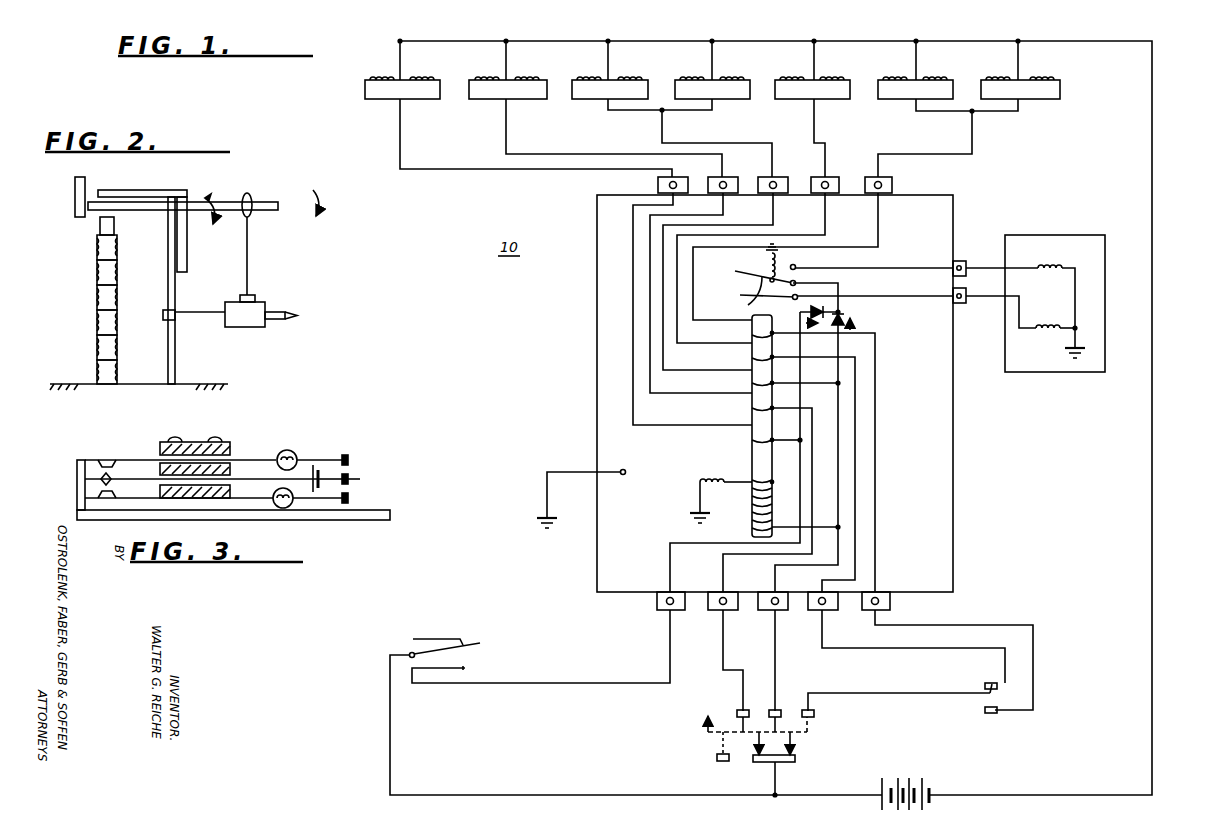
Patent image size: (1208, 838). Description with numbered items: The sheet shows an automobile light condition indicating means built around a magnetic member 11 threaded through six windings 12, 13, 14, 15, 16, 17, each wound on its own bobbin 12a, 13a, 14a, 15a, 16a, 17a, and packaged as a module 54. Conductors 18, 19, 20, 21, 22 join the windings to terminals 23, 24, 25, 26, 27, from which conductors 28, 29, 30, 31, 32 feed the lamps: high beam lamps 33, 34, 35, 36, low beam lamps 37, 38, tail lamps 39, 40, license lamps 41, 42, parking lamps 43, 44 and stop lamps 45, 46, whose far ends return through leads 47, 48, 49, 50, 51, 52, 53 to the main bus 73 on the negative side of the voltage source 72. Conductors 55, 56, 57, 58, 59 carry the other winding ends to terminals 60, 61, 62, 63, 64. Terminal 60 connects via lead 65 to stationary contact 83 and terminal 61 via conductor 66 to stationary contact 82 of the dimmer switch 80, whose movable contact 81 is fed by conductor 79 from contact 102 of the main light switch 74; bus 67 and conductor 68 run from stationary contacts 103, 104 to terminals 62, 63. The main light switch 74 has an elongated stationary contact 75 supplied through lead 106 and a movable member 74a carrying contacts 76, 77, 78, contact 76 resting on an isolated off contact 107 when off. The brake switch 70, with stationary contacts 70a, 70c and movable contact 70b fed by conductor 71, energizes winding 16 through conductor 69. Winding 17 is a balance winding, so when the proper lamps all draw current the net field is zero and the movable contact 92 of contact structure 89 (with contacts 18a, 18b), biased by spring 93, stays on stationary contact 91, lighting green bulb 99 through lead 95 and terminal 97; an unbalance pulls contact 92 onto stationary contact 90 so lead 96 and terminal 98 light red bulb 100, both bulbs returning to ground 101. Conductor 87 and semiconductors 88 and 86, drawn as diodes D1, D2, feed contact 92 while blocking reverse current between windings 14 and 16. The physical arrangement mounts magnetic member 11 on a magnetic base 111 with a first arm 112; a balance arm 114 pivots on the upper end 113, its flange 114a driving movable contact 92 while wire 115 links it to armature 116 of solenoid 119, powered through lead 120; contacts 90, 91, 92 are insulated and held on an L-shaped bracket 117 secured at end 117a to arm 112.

In FIG. 1, the magnetic member 11 is at (670, 453).
In FIG. 2, the magnetic member 11 is at (99, 226).
In FIG. 1, the winding 12 is at (750, 326).
In FIG. 2, the winding 12 is at (96, 250).
In FIG. 1, the winding 13 is at (750, 350).
In FIG. 2, the winding 13 is at (96, 274).
In FIG. 1, the winding 14 is at (750, 376).
In FIG. 2, the winding 14 is at (96, 299).
In FIG. 1, the winding 15 is at (750, 400).
In FIG. 2, the winding 15 is at (96, 324).
In FIG. 1, the winding 16 is at (750, 430).
In FIG. 2, the winding 16 is at (96, 349).
In FIG. 1, the balance winding 17 is at (752, 479).
In FIG. 2, the balance winding 17 is at (96, 374).
In FIG. 2, the bobbin 12a is at (116, 240).
In FIG. 2, the bobbin 13a is at (116, 266).
In FIG. 2, the bobbin 14a is at (116, 292).
In FIG. 2, the bobbin 15a is at (116, 318).
In FIG. 2, the bobbin 16a is at (116, 344).
In FIG. 2, the bobbin 17a is at (116, 370).
In FIG. 1, the conductor 18 is at (694, 297).
In FIG. 3, the relay contact 18a is at (110, 476).
In FIG. 3, the relay contact 18b is at (110, 483).
In FIG. 1, the conductor 19 is at (678, 333).
In FIG. 3, the conductor 19 is at (107, 500).
In FIG. 1, the conductor 20 is at (664, 357).
In FIG. 3, the conductor 20 is at (120, 458).
In FIG. 1, the conductor 21 is at (651, 380).
In FIG. 1, the conductor 22 is at (634, 407).
In FIG. 1, the terminal 23 is at (887, 178).
In FIG. 1, the terminal 24 is at (832, 178).
In FIG. 1, the terminal 25 is at (784, 178).
In FIG. 1, the terminal 26 is at (734, 178).
In FIG. 1, the terminal 27 is at (682, 178).
In FIG. 1, the conductor 28 is at (973, 133).
In FIG. 1, the conductor 29 is at (815, 125).
In FIG. 1, the conductor 30 is at (663, 127).
In FIG. 2, the conductor 30 is at (224, 195).
In FIG. 1, the conductor 31 is at (507, 127).
In FIG. 1, the conductor 32 is at (401, 130).
In FIG. 2, the conductor 32 is at (318, 205).
In FIG. 1, the high beam lamp 33 is at (898, 78).
In FIG. 1, the high beam lamp 34 is at (942, 78).
In FIG. 1, the high beam bulb 35 is at (1000, 78).
In FIG. 1, the high beam bulb 36 is at (1020, 77).
In FIG. 1, the low beam head lamp 37 is at (842, 70).
In FIG. 1, the low beam head lamp 38 is at (796, 78).
In FIG. 1, the tail light lamp 39 is at (742, 70).
In FIG. 1, the tail light lamp 40 is at (692, 78).
In FIG. 1, the license plate lamp 41 is at (638, 70).
In FIG. 1, the license plate lamp 42 is at (592, 78).
In FIG. 1, the parking light lamp 43 is at (536, 70).
In FIG. 1, the parking light lamp 44 is at (490, 78).
In FIG. 1, the stop light lamp 45 is at (428, 70).
In FIG. 1, the stop light lamp 46 is at (382, 78).
In FIG. 1, the conductor 47 is at (1016, 46).
In FIG. 1, the conductor 48 is at (914, 46).
In FIG. 1, the lead 49 is at (812, 46).
In FIG. 1, the lead 50 is at (710, 48).
In FIG. 1, the lead 51 is at (606, 48).
In FIG. 1, the lead 52 is at (505, 48).
In FIG. 1, the lead 53 is at (398, 48).
In FIG. 1, the module 54 is at (597, 314).
In FIG. 1, the conductor 55 is at (876, 377).
In FIG. 1, the conductor 56 is at (856, 428).
In FIG. 1, the conductor 57 is at (836, 488).
In FIG. 1, the conductor 58 is at (812, 480).
In FIG. 1, the conductor 59 is at (802, 464).
In FIG. 1, the terminal 60 is at (879, 610).
In FIG. 1, the terminal 61 is at (826, 610).
In FIG. 1, the terminal 62 is at (778, 610).
In FIG. 1, the terminal 63 is at (727, 610).
In FIG. 1, the terminal 64 is at (674, 610).
In FIG. 1, the lead 65 is at (1003, 616).
In FIG. 1, the conductor 66 is at (856, 648).
In FIG. 1, the bus 67 is at (776, 658).
In FIG. 1, the conductor 68 is at (724, 658).
In FIG. 1, the conductor 69 is at (671, 658).
In FIG. 1, the brake switch 70 is at (443, 646).
In FIG. 1, the stationary contact 70a is at (470, 670).
In FIG. 1, the movable contact 70b is at (410, 651).
In FIG. 1, the stationary contact 70c is at (462, 628).
In FIG. 1, the conductor 71 is at (540, 780).
In FIG. 1, the voltage source 72 is at (912, 772).
In FIG. 3, the voltage source 72 is at (316, 470).
In FIG. 1, the main bus 73 is at (876, 32).
In FIG. 1, the main light switch 74 is at (772, 756).
In FIG. 1, the movable member 74a is at (706, 733).
In FIG. 1, the elongated stationary contact 75 is at (796, 762).
In FIG. 1, the contact 76 is at (826, 756).
In FIG. 1, the contact 77 is at (704, 724).
In FIG. 1, the contact 78 is at (731, 723).
In FIG. 1, the conductor 79 is at (892, 692).
In FIG. 1, the dimmer switch 80 is at (978, 672).
In FIG. 1, the movable contact 81 is at (962, 696).
In FIG. 1, the stationary contact 82 is at (996, 674).
In FIG. 1, the stationary contact 83 is at (990, 714).
In FIG. 1, the semiconductor 86 is at (840, 310).
In FIG. 1, the conductor 87 is at (840, 350).
In FIG. 1, the semiconductor 88 is at (808, 330).
In FIG. 1, the contact structure 89 is at (740, 283).
In FIG. 1, the stationary contact 90 is at (740, 288).
In FIG. 1, the stationary contact 91 is at (738, 272).
In FIG. 3, the stationary contact 91 is at (148, 459).
In FIG. 1, the movable contact 92 is at (747, 296).
In FIG. 3, the movable contact 92 is at (148, 480).
In FIG. 1, the spring member 93 is at (768, 254).
In FIG. 3, the spring member 93 is at (127, 500).
In FIG. 1, the lead 95 is at (924, 266).
In FIG. 1, the lead 96 is at (924, 294).
In FIG. 1, the terminal 97 is at (963, 258).
In FIG. 1, the terminal 98 is at (960, 304).
In FIG. 1, the green bulb 99 is at (1044, 272).
In FIG. 1, the red bulb 100 is at (1021, 321).
In FIG. 3, the red bulb 100 is at (273, 495).
In FIG. 1, the ground potential 101 is at (1062, 354).
In FIG. 1, the stationary contact 102 is at (1004, 350).
In FIG. 1, the stationary contact 103 is at (778, 708).
In FIG. 1, the stationary contact 104 is at (740, 708).
In FIG. 1, the lead 106 is at (778, 785).
In FIG. 1, the off contact member 107 is at (712, 764).
In FIG. 2, the base member 111 is at (136, 386).
In FIG. 2, the first arm 112 is at (176, 366).
In FIG. 2, the upper end 113 is at (172, 198).
In FIG. 2, the balance arm 114 is at (265, 202).
In FIG. 3, the balance arm 114 is at (214, 518).
In FIG. 2, the flanged portion 114a is at (75, 195).
In FIG. 3, the flanged portion 114a is at (77, 488).
In FIG. 2, the wire 115 is at (248, 242).
In FIG. 3, the wire 115 is at (237, 456).
In FIG. 2, the armature 116 is at (252, 294).
In FIG. 3, the armature 116 is at (216, 440).
In FIG. 2, the L-shaped bracket 117 is at (140, 190).
In FIG. 3, the L-shaped bracket 117 is at (228, 442).
In FIG. 2, the bracket end 117a is at (188, 248).
In FIG. 2, the solenoid 119 is at (248, 328).
In FIG. 2, the lead 120 is at (298, 316).
In FIG. 1, the diode D1 is at (799, 312).
In FIG. 1, the diode D2 is at (852, 318).